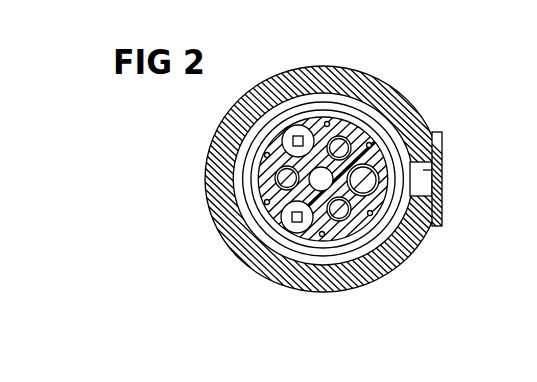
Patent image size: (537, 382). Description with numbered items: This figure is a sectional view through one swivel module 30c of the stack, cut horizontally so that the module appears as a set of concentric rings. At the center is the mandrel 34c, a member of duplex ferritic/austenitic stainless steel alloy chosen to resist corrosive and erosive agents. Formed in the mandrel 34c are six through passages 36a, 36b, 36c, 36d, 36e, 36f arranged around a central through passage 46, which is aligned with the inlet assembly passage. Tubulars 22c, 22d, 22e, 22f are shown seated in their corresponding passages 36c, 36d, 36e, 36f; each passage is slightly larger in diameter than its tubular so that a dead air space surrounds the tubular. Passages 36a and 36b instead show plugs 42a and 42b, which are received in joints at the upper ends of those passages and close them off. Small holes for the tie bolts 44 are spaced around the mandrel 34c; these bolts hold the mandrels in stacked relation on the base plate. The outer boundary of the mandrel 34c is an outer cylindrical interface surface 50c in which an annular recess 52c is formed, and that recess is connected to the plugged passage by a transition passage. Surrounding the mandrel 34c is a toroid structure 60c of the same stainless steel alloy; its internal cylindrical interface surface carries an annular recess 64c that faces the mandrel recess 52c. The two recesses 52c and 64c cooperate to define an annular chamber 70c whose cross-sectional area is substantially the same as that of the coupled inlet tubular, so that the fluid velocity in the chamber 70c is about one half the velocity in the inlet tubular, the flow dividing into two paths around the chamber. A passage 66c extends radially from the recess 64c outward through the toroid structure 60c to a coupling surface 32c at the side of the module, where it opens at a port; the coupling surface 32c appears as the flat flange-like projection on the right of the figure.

The swivel module 30c is at (400, 84).
The coupling surface 32c is at (442, 157).
The mandrel 34c is at (245, 118).
The through passage 36a is at (286, 229).
The through passage 36b is at (284, 133).
The through passage 36c is at (380, 183).
The through passage 36d is at (276, 181).
The through passage 36e is at (339, 222).
The through passage 36f is at (338, 136).
The tubular 22c is at (372, 213).
The tubular 22d is at (280, 187).
The tubular 22e is at (352, 216).
The tubular 22f is at (349, 139).
The plug 42a is at (297, 222).
The plug 42b is at (298, 136).
The tie bolt 44 is at (322, 237).
The central through passage 46 is at (321, 167).
The outer cylindrical interface surface 50c is at (268, 157).
The annular recess 52c is at (247, 224).
The toroid structure 60c is at (270, 144).
The annular recess 64c is at (258, 236).
The passage 66c is at (430, 168).
The annular chamber 70c is at (377, 133).